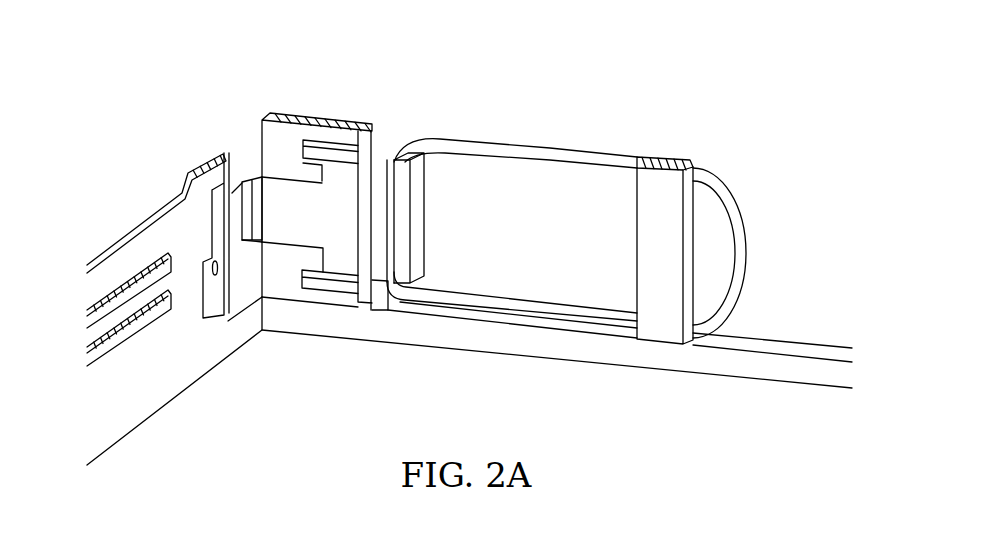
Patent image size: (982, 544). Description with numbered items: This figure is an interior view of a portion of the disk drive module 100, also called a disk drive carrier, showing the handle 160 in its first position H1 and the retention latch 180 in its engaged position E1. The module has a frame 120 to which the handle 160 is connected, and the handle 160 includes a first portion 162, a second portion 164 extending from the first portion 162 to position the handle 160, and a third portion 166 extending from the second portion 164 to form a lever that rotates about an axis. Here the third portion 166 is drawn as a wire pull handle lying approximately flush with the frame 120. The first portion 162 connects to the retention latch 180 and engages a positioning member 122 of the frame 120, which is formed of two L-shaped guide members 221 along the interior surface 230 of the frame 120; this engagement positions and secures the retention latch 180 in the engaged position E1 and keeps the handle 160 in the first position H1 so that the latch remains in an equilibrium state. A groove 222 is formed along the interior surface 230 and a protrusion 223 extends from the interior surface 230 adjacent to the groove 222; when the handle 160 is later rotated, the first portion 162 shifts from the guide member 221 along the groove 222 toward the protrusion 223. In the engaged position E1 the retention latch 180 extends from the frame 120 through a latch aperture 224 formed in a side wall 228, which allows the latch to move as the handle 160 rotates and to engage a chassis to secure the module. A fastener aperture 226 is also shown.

The disk drive module 100 is at (619, 219).
The frame 120 is at (144, 227).
The positioning member 122 is at (352, 139).
The handle 160 is at (716, 176).
The first portion 162 is at (378, 287).
The second portion 164 is at (432, 140).
The third portion 166 is at (742, 229).
The retention latch 180 is at (239, 208).
The L-shaped guide members 221 is at (308, 151).
The groove 222 is at (399, 149).
The protrusion 223 is at (405, 237).
The latch aperture 224 is at (283, 225).
The fastener aperture 226 is at (215, 289).
The side wall 228 is at (140, 397).
The interior surface 230 is at (291, 293).
The engaged position E1 is at (245, 252).
The first position H1 is at (744, 294).